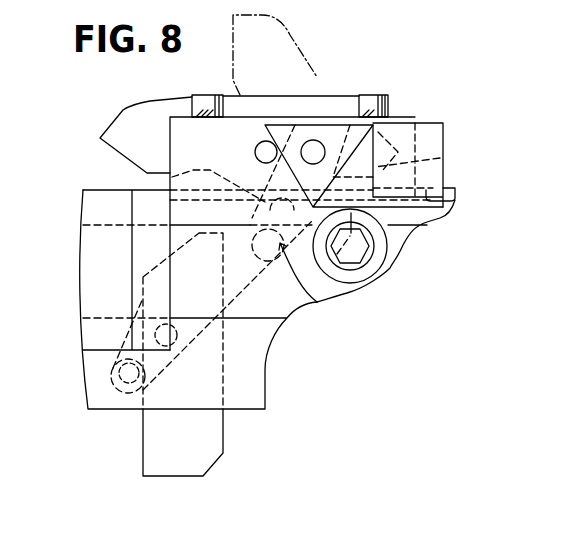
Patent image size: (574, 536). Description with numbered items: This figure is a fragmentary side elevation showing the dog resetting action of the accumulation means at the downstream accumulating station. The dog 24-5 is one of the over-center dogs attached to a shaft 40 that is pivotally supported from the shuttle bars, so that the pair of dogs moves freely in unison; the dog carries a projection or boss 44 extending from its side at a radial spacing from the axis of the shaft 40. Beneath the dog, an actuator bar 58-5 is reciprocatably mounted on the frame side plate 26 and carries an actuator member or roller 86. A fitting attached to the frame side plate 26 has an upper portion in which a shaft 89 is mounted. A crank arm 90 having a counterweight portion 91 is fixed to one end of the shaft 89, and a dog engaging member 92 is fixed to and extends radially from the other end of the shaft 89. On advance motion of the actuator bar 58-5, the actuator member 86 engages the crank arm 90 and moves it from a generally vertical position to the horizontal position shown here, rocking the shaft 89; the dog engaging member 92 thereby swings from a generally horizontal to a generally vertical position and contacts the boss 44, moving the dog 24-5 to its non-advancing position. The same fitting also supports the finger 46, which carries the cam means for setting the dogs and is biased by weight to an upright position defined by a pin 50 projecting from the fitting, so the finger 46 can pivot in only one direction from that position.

The dog 24-5 is at (108, 128).
The shaft 40 is at (257, 141).
The shaft 89 is at (313, 140).
The crank arm 90 is at (427, 123).
The dog engaging member 92 is at (440, 158).
The counterweight portion 91 is at (455, 200).
The actuator bar 58-5 is at (443, 218).
The actuator member 86 is at (387, 258).
The boss 44 is at (317, 302).
The frame side plate 26 is at (267, 362).
The pin 50 is at (111, 377).
The finger 46 is at (223, 430).